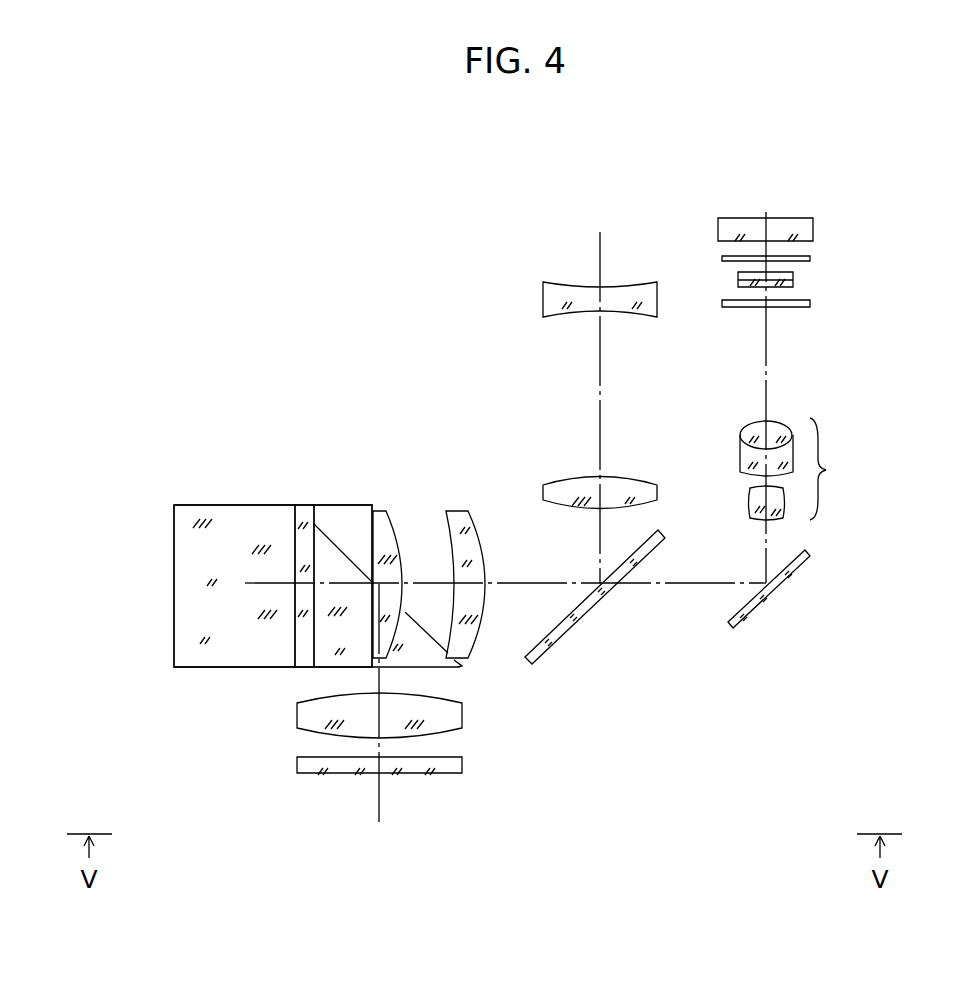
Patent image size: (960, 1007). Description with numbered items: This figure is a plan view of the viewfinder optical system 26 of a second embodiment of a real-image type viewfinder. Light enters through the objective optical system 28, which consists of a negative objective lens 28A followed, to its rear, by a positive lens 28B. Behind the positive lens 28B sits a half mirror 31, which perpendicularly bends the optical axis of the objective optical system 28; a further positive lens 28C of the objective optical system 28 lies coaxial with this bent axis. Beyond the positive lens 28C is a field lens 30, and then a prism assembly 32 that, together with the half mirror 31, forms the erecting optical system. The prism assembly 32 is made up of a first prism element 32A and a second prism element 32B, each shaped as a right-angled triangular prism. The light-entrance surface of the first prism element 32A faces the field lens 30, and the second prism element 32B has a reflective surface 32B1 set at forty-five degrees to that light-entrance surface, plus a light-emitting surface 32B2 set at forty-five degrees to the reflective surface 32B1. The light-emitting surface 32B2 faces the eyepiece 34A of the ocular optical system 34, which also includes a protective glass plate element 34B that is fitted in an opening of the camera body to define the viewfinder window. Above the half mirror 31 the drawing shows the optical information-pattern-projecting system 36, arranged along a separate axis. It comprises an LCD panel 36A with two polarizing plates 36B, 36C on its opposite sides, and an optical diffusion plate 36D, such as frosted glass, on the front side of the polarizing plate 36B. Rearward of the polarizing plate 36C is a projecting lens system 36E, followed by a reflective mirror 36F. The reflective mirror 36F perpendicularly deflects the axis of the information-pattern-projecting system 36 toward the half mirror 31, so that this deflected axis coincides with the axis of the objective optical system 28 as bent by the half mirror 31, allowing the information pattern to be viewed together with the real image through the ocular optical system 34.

The viewfinder optical system 26 is at (855, 605).
The objective optical system 28 is at (654, 438).
The negative objective lens 28A is at (555, 298).
The positive lens 28B is at (645, 491).
The positive lens 28C is at (473, 548).
The field lens 30 is at (387, 527).
The half mirror 31 is at (573, 627).
The prism assembly 32 is at (219, 684).
The first prism element 32A is at (238, 523).
The second prism element 32B is at (323, 547).
The reflective surface 32B1 is at (353, 566).
The light-emitting surface 32B2 is at (340, 667).
The ocular optical system 34 is at (564, 756).
The eyepiece 34A is at (445, 715).
The protective glass plate element 34B is at (445, 764).
The optical information-pattern-projecting system 36 is at (826, 393).
The LCD panel 36A is at (738, 279).
The polarizing plate 36B is at (810, 259).
The polarizing plate 36C is at (810, 302).
The optical diffusion plate 36D is at (768, 216).
The projecting lens system 36E is at (810, 469).
The reflective mirror 36F is at (760, 604).